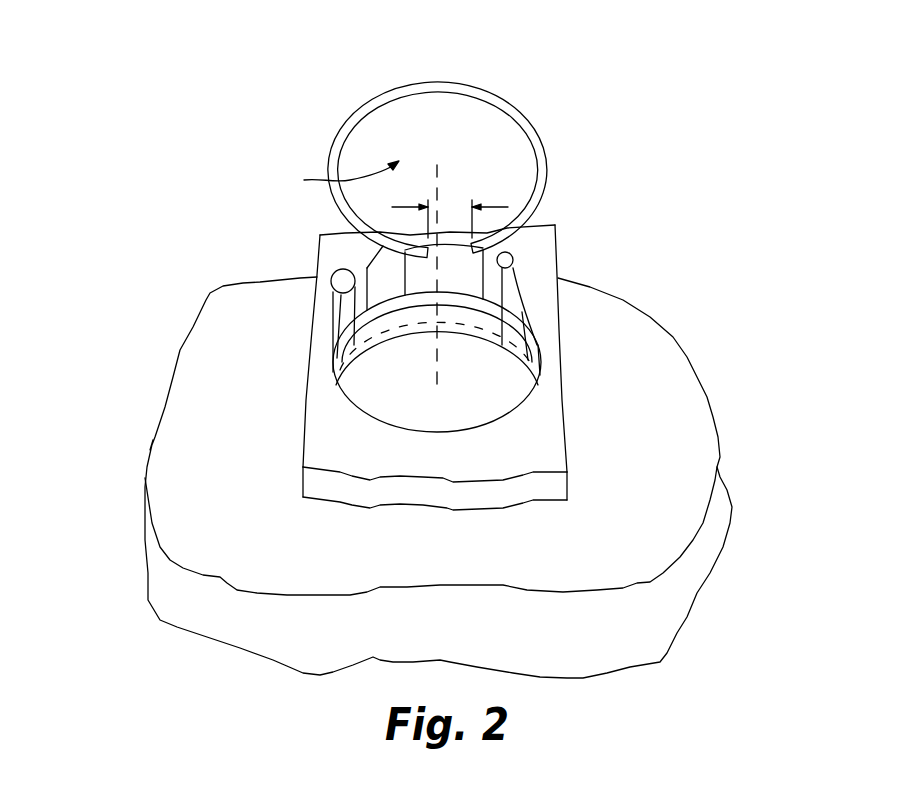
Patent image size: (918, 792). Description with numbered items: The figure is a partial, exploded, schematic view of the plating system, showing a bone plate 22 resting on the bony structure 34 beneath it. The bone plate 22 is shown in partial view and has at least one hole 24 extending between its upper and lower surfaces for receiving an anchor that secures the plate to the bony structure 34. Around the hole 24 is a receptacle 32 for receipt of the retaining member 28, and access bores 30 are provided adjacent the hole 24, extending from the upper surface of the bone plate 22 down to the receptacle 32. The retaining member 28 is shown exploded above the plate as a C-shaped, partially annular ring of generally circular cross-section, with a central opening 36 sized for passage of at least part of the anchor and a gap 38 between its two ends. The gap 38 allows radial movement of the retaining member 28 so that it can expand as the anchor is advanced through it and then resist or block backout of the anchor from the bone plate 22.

The bone plate 22 is at (327, 442).
The hole 24 is at (487, 383).
The retaining member 28 is at (538, 130).
The access bores 30 is at (333, 270).
The receptacle 32 is at (340, 357).
The bony structure 34 is at (680, 430).
The central opening 36 is at (339, 178).
The gap 38 is at (450, 277).